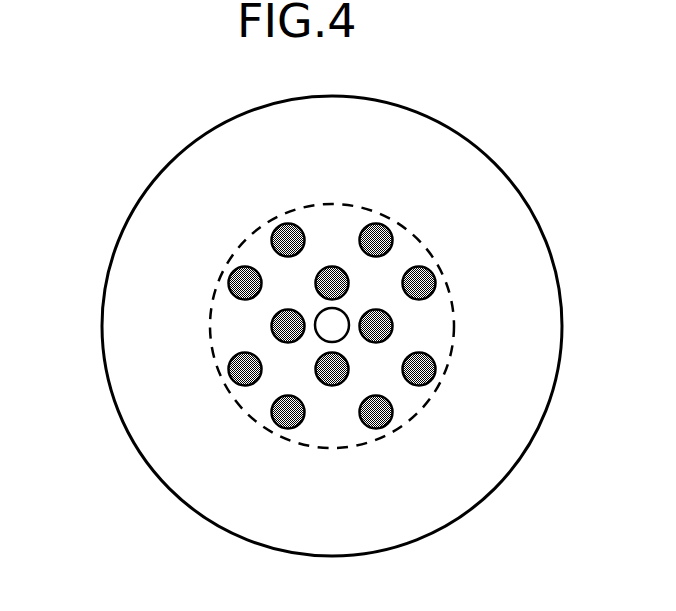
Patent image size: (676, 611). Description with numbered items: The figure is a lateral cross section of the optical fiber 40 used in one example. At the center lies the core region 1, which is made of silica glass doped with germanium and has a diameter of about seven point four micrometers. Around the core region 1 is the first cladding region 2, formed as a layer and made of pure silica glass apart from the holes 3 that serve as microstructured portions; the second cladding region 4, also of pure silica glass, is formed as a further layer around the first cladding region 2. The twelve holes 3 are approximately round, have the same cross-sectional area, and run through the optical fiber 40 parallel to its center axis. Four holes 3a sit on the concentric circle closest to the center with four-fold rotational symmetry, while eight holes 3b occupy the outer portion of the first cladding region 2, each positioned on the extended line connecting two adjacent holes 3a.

The optical fiber 40 is at (132, 207).
The core region 1 is at (335, 324).
The first cladding region 2 is at (433, 325).
The holes 3 is at (239, 303).
The holes 3a is at (288, 325).
The holes 3b is at (243, 369).
The second cladding region 4 is at (487, 402).